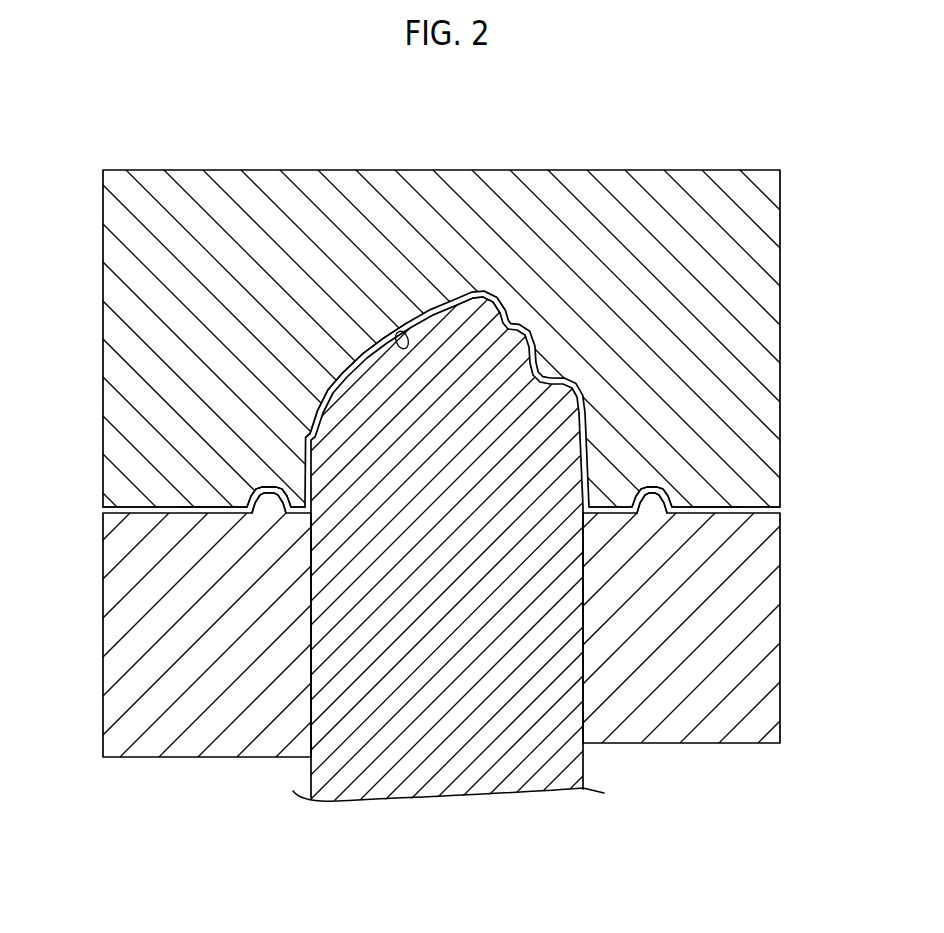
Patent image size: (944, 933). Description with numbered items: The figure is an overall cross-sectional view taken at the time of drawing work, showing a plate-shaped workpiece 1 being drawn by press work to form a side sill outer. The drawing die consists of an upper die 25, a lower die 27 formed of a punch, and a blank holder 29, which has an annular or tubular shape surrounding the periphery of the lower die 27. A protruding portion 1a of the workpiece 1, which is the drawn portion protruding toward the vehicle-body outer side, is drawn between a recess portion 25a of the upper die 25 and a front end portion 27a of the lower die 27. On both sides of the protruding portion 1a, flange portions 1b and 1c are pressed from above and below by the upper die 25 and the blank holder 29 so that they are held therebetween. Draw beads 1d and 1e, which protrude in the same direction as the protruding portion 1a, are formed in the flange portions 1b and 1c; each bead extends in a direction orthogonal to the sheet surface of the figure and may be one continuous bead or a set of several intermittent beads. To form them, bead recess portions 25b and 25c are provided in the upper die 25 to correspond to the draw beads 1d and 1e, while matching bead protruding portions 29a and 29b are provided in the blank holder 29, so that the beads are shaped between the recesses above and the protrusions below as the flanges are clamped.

The workpiece 1 is at (428, 303).
The protruding portion 1a is at (500, 303).
The flange portion 1b is at (205, 517).
The flange portion 1c is at (713, 516).
The draw bead 1d is at (256, 487).
The draw bead 1e is at (650, 482).
The upper die 25 is at (103, 333).
The recess portion 25a is at (380, 342).
The bead recess portion 25b is at (268, 493).
The bead recess portion 25c is at (648, 494).
The lower die 27 is at (384, 797).
The front end portion 27a is at (480, 297).
The blank holder 29 is at (103, 714).
The bead protruding portion 29a is at (256, 494).
The bead protruding portion 29b is at (666, 494).